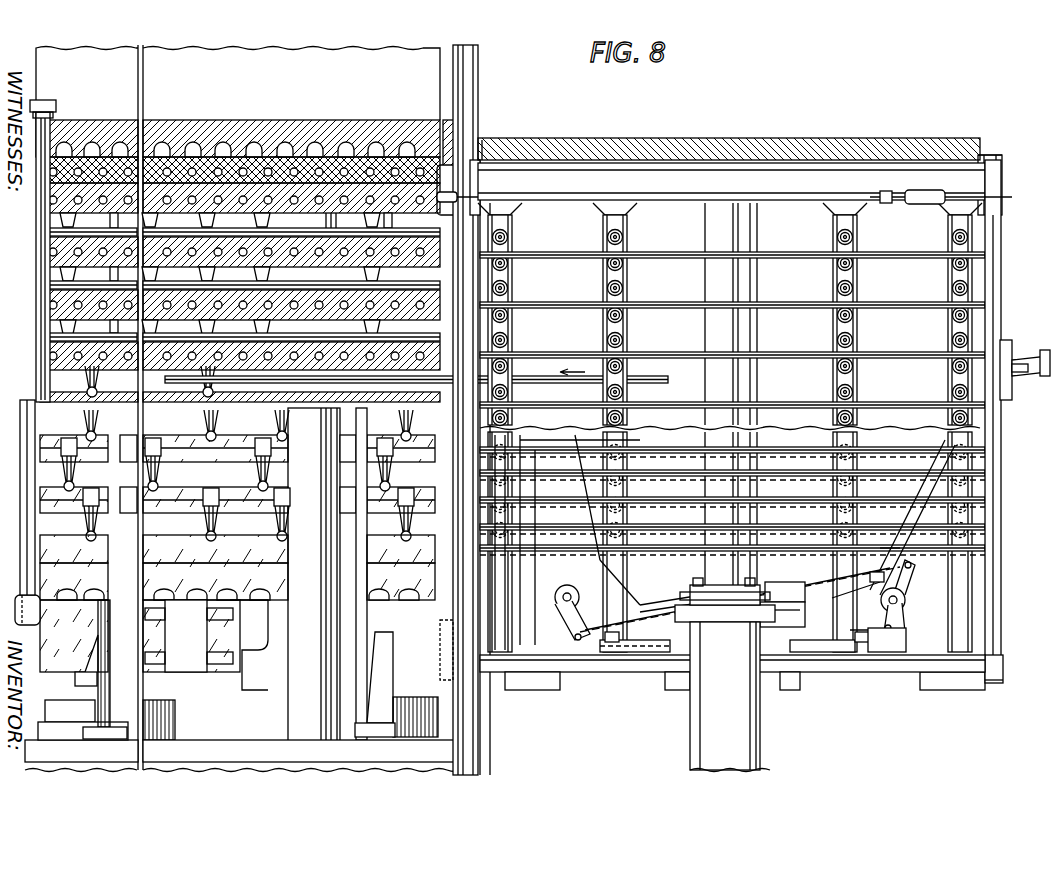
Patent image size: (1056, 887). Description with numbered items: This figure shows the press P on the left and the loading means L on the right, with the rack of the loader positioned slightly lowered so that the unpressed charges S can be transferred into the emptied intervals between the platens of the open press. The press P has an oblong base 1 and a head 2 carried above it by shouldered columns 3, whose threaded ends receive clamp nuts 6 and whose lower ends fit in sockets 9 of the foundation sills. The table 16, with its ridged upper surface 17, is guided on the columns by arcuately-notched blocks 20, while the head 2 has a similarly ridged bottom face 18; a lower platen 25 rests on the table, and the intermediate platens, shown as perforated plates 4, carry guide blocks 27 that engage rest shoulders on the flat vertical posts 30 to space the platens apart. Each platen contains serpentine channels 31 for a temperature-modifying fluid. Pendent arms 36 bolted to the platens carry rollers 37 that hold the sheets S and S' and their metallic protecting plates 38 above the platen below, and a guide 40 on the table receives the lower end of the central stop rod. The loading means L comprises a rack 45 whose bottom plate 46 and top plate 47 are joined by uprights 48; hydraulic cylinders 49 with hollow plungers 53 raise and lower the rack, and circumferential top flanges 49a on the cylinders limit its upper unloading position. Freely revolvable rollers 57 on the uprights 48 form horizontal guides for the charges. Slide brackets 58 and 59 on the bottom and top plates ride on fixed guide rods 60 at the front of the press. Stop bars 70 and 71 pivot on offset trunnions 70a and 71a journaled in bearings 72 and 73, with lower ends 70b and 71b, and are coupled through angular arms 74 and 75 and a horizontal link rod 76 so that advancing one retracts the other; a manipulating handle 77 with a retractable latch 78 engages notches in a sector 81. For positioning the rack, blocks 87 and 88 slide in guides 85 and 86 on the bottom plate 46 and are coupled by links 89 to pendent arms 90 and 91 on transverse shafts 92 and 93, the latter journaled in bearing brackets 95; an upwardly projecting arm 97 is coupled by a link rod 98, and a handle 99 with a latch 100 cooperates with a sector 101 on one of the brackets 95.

The base 1 is at (215, 760).
The head 2 is at (365, 65).
The shouldered columns 3 is at (42, 204).
The perforated plates 4 is at (44, 282).
The clamp nut 6 is at (68, 224).
The socket 9 is at (30, 310).
The table 16 is at (238, 600).
The ridged upper surface 17 is at (246, 600).
The ridged bottom surface 18 is at (208, 150).
The guide blocks 20 is at (266, 692).
The platen 25 is at (174, 548).
The guide blocks 27 is at (128, 436).
The vertical posts 30 is at (112, 578).
The serpentine channels 31 is at (322, 166).
The pendent arms 36 is at (170, 379).
The rollers 37 is at (88, 386).
The protecting plates 38 is at (668, 378).
The guide 40 is at (32, 614).
The rack 45 is at (1015, 708).
The bottom plate 46 is at (580, 672).
The top plate 47 is at (872, 146).
The uprights 48 is at (512, 283).
The hydraulic cylinders 49 is at (760, 736).
The top flanges 49a is at (728, 624).
The hollow plungers 53 is at (745, 333).
The rollers 57 is at (608, 316).
The slide bracket 58 is at (567, 542).
The slide bracket 59 is at (462, 165).
The guide rods 60 is at (476, 78).
The stop bar 70 is at (472, 467).
The pivot trunnion 70a is at (482, 140).
The lower end of bar 70b is at (460, 700).
The stop bar 71 is at (1001, 278).
The pivot trunnion 71a is at (996, 156).
The lower end of post 71b is at (992, 683).
The bearings 72 is at (525, 690).
The bearings 73 is at (482, 165).
The angular arm 74 is at (470, 190).
The angular arm 75 is at (1002, 197).
The link rod 76 is at (731, 181).
The manipulating handle 77 is at (1020, 355).
The retractable latch 78 is at (1040, 378).
The sector 81 is at (1014, 376).
The guide 85 is at (640, 652).
The guide 86 is at (820, 652).
The blocks 87 is at (656, 605).
The blocks 88 is at (800, 630).
The links 89 is at (612, 642).
The pendent arm 90 is at (570, 624).
The pendent arm 91 is at (906, 626).
The transverse shaft 92 is at (567, 588).
The transverse shaft 93 is at (906, 600).
The bearing brackets 95 is at (896, 652).
The upwardly projecting arm 97 is at (912, 566).
The link rod 98 is at (818, 592).
The manipulating handle 99 is at (945, 445).
The retractable latch 100 is at (905, 548).
The sector 101 is at (880, 585).
The press P is at (330, 34).
The loading means L is at (795, 130).
The unpressed slabs or sheets S is at (707, 375).
The pressed slabs or sheets S' is at (732, 394).